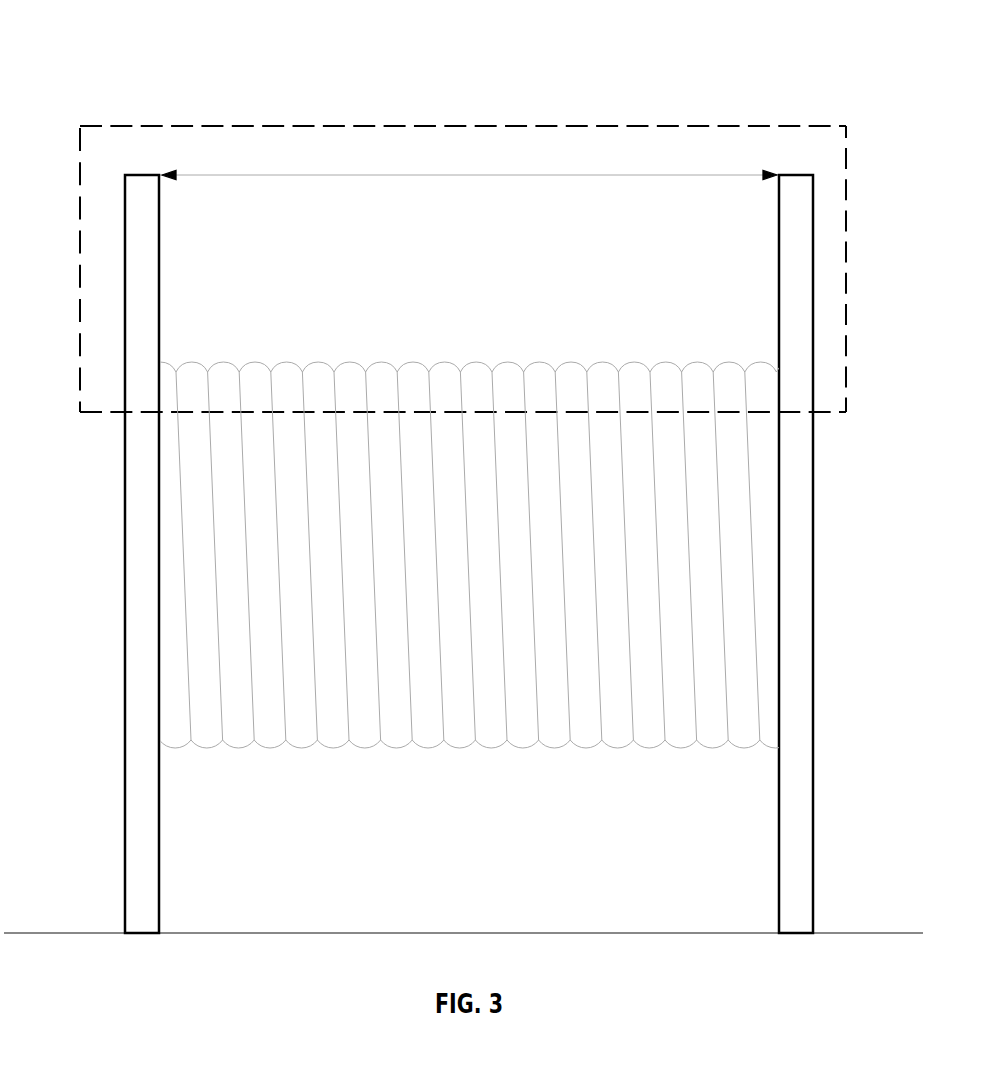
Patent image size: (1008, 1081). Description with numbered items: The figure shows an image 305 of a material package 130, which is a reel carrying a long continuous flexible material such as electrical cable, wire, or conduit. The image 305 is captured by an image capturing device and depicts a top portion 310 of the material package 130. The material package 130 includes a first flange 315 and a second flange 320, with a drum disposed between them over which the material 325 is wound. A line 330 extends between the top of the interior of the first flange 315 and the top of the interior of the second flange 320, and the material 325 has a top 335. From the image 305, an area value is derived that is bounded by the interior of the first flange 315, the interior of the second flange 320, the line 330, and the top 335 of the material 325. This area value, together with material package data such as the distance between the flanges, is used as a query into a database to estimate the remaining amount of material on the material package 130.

The material package 130 is at (152, 78).
The image 305 is at (707, 127).
The top portion 310 is at (530, 152).
The first flange 315 is at (124, 263).
The second flange 320 is at (813, 263).
The material 325 is at (225, 530).
The line 330 is at (353, 173).
The top of material 335 is at (417, 342).